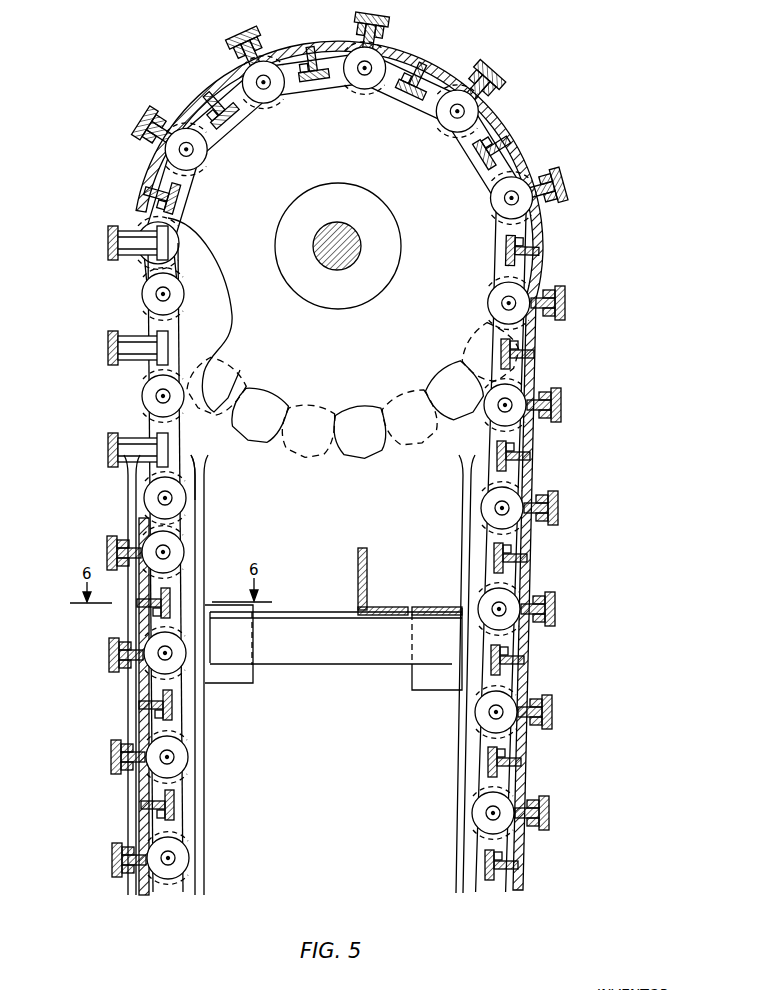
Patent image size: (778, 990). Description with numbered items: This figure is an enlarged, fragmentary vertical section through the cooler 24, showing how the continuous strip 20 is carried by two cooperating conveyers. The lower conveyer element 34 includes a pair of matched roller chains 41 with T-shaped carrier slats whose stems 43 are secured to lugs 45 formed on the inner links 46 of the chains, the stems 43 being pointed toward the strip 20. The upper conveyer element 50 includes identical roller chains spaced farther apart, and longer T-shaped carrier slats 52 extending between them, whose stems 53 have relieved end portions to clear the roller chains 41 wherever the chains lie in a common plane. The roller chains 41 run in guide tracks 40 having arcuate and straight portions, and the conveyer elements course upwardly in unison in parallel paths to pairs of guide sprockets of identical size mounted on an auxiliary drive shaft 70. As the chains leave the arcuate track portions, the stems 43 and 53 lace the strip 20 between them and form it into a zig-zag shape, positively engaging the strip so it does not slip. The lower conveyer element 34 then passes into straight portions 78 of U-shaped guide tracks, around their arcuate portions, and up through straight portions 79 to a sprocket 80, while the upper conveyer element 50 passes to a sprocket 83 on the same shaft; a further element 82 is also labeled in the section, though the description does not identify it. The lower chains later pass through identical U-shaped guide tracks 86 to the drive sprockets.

The continuous strip 20 is at (530, 584).
The cooler 24 is at (512, 101).
The lower conveyer element 34 is at (186, 824).
The guide tracks 40 is at (203, 789).
The roller chains 41 is at (184, 778).
The stems 43 is at (165, 627).
The lugs 45 is at (500, 750).
The inner links 46 is at (483, 786).
The upper conveyer element 50 is at (557, 817).
The carrier slats 52 is at (112, 545).
The stems 53 is at (130, 668).
The auxiliary drive shaft 70 is at (357, 233).
The straight portions 78 is at (470, 788).
The straight portions 79 is at (193, 813).
The sprocket 80 is at (412, 437).
The guide rail end 82 is at (197, 500).
The sprocket 83 is at (200, 365).
The U-shaped guide tracks 86 is at (462, 810).